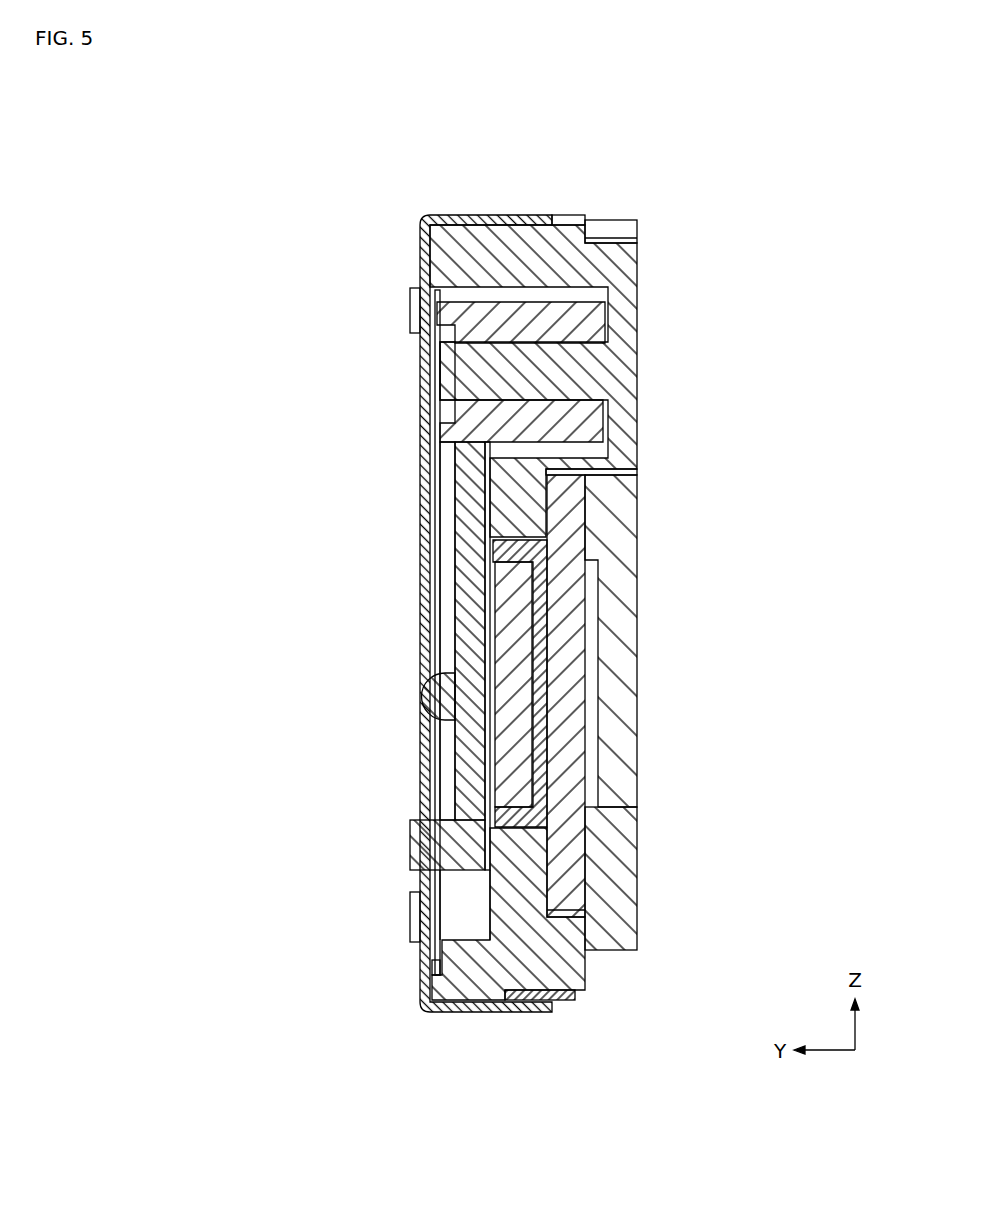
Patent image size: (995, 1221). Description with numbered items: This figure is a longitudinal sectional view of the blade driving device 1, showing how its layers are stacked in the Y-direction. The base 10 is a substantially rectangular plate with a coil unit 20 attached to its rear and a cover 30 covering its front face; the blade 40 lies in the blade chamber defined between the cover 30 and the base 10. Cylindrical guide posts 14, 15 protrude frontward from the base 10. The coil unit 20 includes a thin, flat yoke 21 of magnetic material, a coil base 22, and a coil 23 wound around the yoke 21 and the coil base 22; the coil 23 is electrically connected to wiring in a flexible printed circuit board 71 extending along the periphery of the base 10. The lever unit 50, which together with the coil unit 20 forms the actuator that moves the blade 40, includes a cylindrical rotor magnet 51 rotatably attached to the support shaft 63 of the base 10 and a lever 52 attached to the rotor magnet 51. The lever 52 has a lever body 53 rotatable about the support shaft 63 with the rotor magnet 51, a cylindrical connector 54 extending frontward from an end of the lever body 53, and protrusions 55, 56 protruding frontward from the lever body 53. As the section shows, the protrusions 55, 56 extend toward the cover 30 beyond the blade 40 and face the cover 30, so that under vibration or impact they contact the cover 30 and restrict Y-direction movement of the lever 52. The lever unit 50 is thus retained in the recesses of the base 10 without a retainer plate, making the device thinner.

The blade driving device 1 is at (734, 168).
The base 10 is at (618, 370).
The guide post 14 is at (412, 308).
The guide post 15 is at (412, 918).
The coil unit 20 is at (630, 763).
The yoke 21 is at (575, 765).
The coil base 22 is at (619, 965).
The coil 23 is at (628, 688).
The cover 30 is at (425, 553).
The blade 40 is at (437, 793).
The lever unit 50 is at (470, 612).
The rotor magnet 51 is at (527, 305).
The lever 52 is at (450, 505).
The lever body 53 is at (466, 607).
The connector 54 is at (425, 845).
The protrusion 55 is at (446, 432).
The protrusion 56 is at (442, 698).
The support shaft 63 is at (446, 372).
The flexible printed circuit board 71 is at (563, 1002).